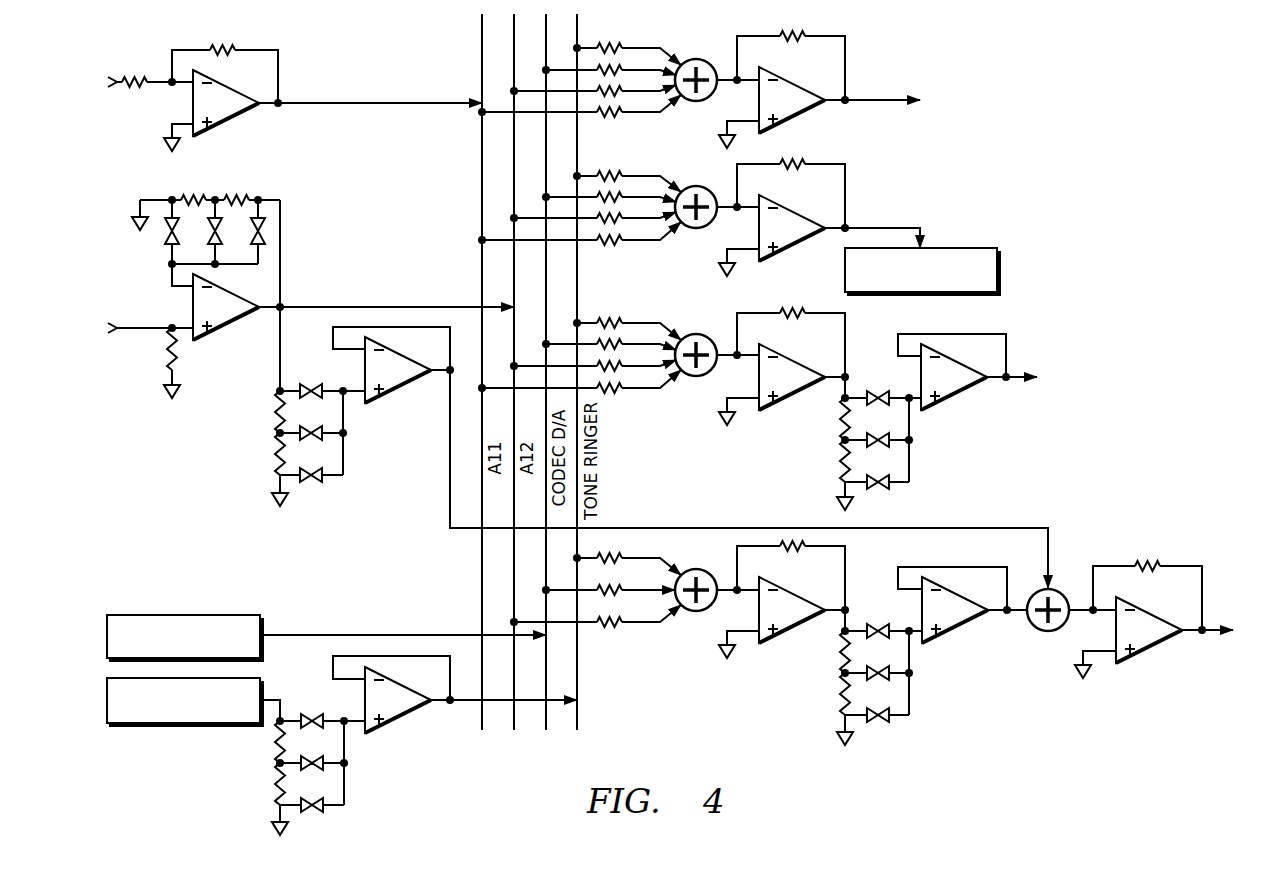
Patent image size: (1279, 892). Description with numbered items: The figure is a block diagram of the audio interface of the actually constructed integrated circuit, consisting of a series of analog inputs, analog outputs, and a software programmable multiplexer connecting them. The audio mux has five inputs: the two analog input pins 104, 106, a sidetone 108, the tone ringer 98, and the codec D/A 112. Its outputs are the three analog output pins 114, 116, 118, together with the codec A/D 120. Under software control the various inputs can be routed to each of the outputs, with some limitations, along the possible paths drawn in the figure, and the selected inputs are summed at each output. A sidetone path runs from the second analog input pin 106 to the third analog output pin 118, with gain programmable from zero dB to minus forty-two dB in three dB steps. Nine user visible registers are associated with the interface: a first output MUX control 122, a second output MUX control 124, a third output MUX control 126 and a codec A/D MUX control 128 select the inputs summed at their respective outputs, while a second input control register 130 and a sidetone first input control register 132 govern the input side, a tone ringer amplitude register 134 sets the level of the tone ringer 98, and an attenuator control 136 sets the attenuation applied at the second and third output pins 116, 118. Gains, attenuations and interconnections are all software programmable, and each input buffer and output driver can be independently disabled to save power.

The tone ringer 98 is at (178, 726).
The AI1 analog input pin 104 is at (126, 79).
The AI2 analog input pin 106 is at (127, 326).
The sidetone 108 is at (394, 391).
The codec D/A 112 is at (178, 613).
The AO1 analog output pin 114 is at (878, 98).
The AO2 analog output pin 116 is at (1017, 372).
The AO3 analog output pin 118 is at (1212, 628).
The codec A/D 120 is at (998, 271).
The AO1 MUX control 122 is at (697, 58).
The AO2 MUX control 124 is at (697, 333).
The AO3 MUX control 126 is at (697, 612).
The codec A/D MUX control 128 is at (696, 185).
The AI2 control register 130 is at (246, 190).
The sidetone AI1 control register 132 is at (240, 475).
The tone ringer amplitude register 134 is at (339, 817).
The AO2, AO3 attenuator control 136 is at (914, 490).